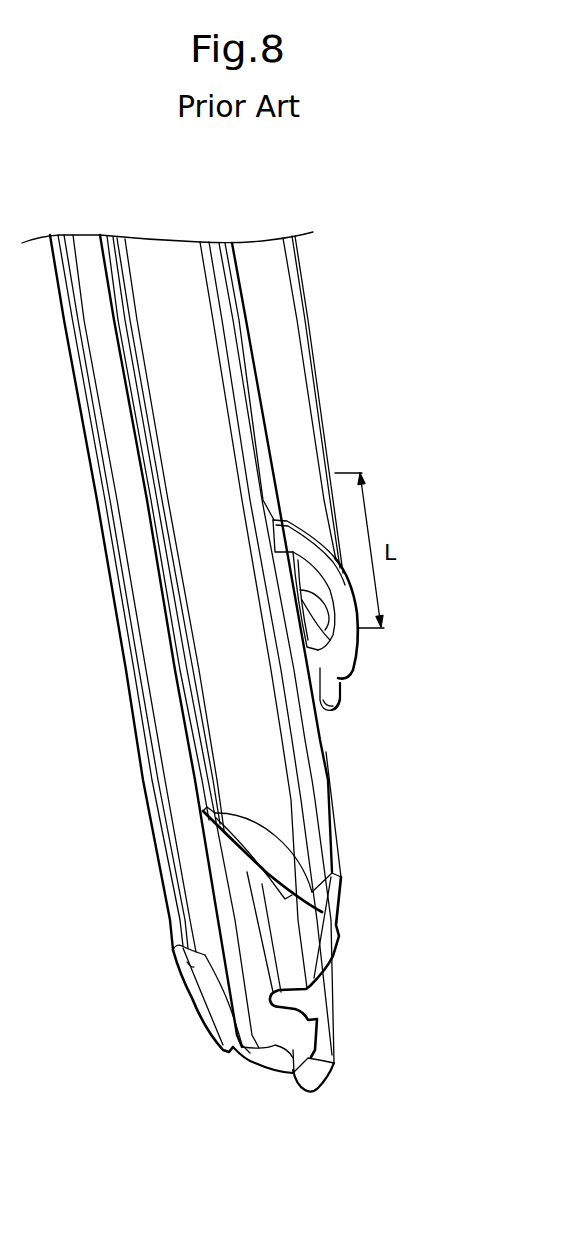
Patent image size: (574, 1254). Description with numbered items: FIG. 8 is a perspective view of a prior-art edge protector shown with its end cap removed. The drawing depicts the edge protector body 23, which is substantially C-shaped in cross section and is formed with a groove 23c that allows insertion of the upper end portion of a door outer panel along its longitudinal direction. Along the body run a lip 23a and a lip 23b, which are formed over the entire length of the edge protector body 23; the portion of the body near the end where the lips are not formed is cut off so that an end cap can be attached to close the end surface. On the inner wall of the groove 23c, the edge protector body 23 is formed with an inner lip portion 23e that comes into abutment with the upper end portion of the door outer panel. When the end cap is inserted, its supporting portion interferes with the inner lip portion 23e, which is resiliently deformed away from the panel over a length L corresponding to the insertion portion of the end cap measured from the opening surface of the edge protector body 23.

The edge protector body 23 is at (360, 827).
The lip 23a is at (178, 948).
The lip 23b is at (262, 847).
The groove 23c is at (343, 693).
The inner lip portion 23e is at (350, 670).